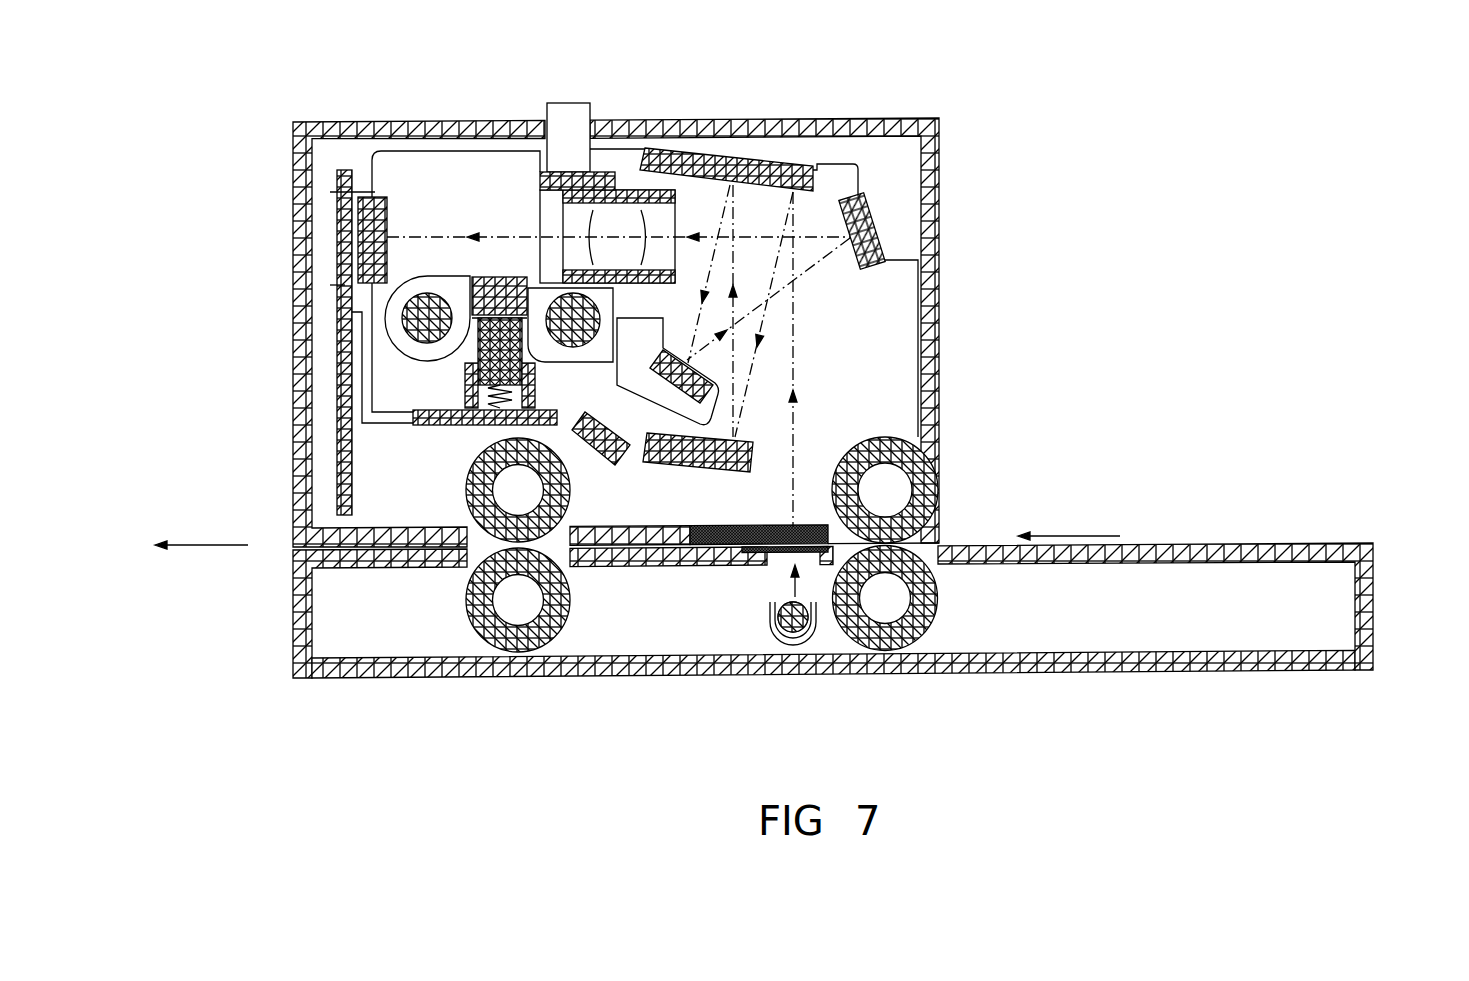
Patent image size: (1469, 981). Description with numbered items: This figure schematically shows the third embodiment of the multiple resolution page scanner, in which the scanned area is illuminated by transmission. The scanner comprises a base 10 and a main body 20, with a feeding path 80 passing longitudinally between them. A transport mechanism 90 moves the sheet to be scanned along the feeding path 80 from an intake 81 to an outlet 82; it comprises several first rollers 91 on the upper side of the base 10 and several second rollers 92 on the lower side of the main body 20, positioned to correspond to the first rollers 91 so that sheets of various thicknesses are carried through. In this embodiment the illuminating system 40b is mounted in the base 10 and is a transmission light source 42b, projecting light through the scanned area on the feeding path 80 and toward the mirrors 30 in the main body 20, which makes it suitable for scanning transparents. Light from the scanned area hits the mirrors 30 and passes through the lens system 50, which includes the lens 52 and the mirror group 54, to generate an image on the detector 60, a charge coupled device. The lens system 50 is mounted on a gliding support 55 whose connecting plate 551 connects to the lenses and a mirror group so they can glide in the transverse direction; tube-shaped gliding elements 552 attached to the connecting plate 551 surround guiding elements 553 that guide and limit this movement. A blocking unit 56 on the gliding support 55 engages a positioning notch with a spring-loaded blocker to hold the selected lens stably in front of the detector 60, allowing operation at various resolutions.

The base 10 is at (1392, 624).
The main body 20 is at (955, 372).
The mirrors 30 is at (791, 142).
The illuminating system 40b is at (760, 626).
The transmission light source 42b is at (812, 630).
The lens system 50 is at (522, 210).
The lens 52 is at (538, 192).
The mirror group 54 is at (690, 352).
The gliding support 55 is at (415, 261).
The connecting plate 551 is at (473, 280).
The gliding elements 552 is at (413, 357).
The guiding elements 553 is at (403, 325).
The blocking unit 56 is at (470, 383).
The detector 60 is at (358, 222).
The feeding path 80 is at (418, 556).
The intake 81 is at (947, 540).
The outlet 82 is at (292, 548).
The transport mechanism 90 is at (948, 636).
The first rollers 91 is at (518, 633).
The second rollers 92 is at (545, 508).